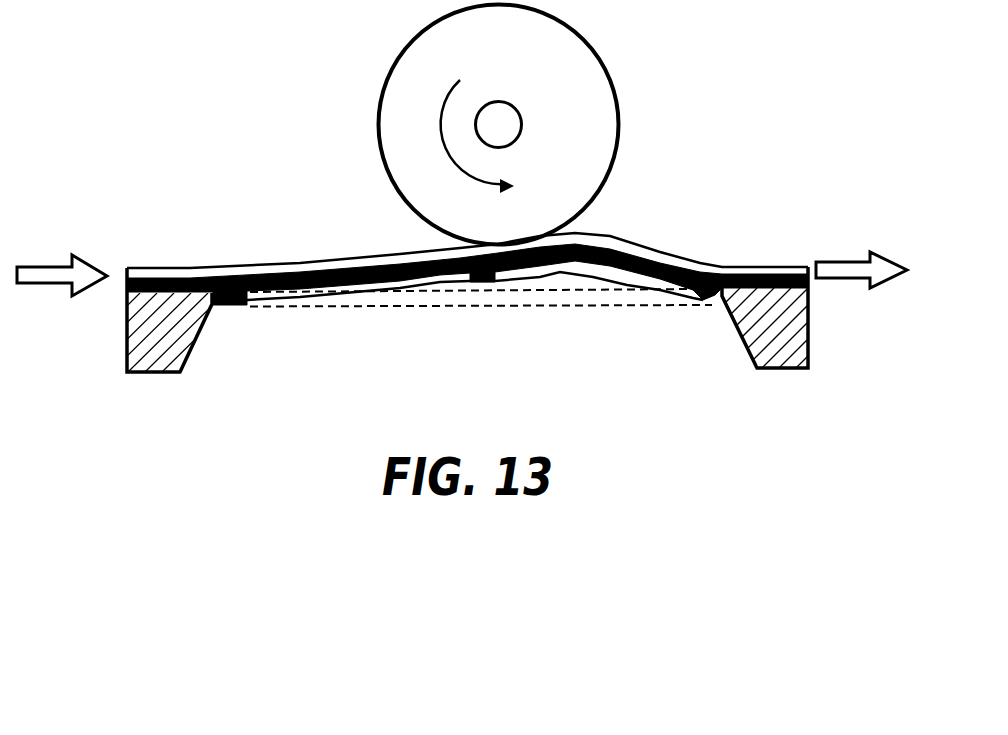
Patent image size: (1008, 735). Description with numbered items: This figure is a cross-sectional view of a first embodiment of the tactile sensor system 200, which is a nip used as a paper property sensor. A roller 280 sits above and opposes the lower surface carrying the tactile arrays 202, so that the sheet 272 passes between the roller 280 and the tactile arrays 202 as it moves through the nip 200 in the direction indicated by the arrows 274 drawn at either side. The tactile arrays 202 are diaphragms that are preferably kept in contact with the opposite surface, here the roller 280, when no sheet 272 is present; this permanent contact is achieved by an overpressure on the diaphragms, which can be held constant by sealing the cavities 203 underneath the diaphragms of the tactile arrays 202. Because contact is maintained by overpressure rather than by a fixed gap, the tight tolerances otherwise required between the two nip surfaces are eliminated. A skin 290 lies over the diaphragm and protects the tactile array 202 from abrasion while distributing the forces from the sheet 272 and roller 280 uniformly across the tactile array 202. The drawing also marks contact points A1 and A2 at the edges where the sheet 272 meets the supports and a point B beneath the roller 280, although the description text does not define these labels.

The tactile sensor system 200 is at (642, 95).
The roller 280 is at (424, 32).
The skin 290 is at (164, 280).
The sheet 272 is at (684, 253).
The arrows 274 is at (44, 266).
The tactile array 202 is at (108, 285).
The cavities 203 is at (558, 305).
The contact point A1 is at (241, 305).
The contact point A2 is at (702, 300).
The contact point B is at (481, 281).